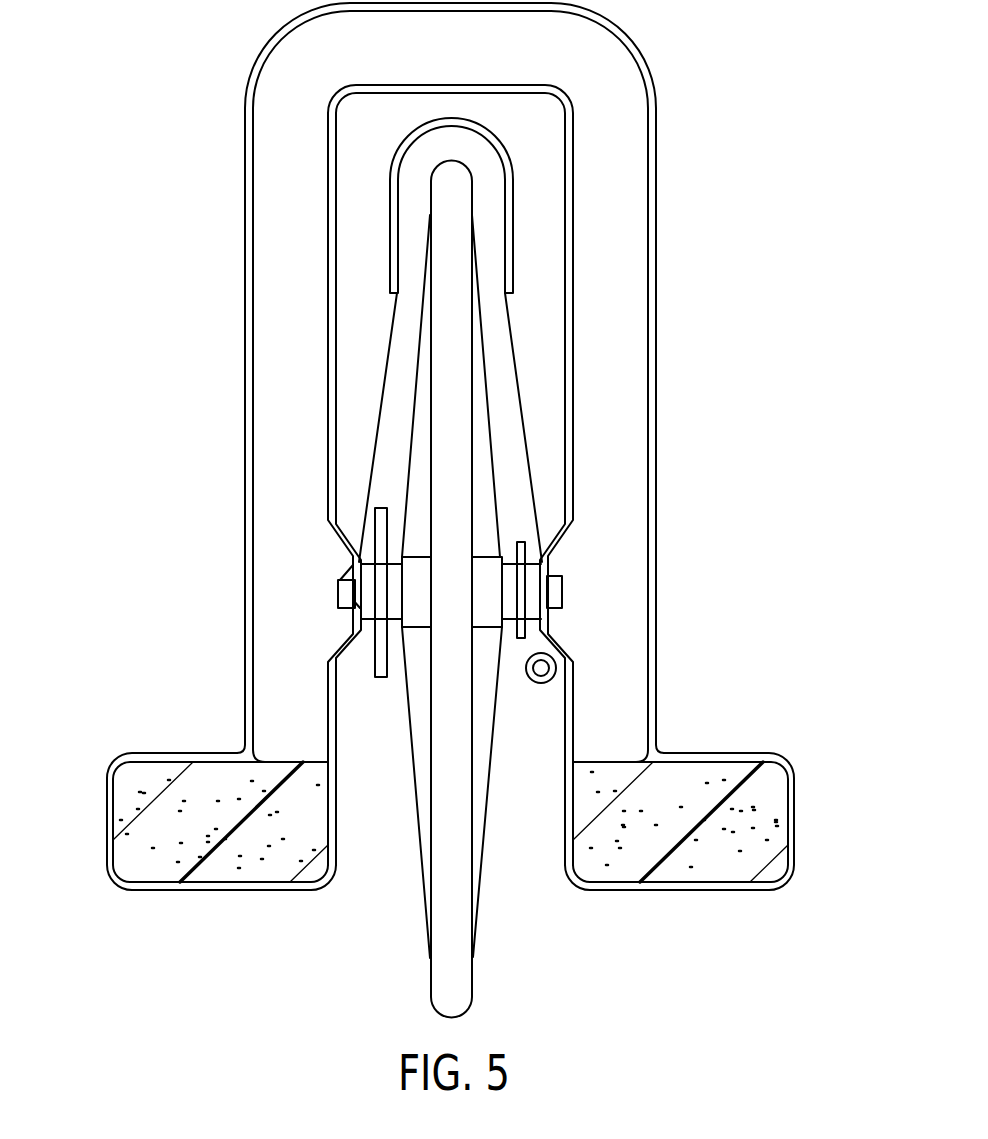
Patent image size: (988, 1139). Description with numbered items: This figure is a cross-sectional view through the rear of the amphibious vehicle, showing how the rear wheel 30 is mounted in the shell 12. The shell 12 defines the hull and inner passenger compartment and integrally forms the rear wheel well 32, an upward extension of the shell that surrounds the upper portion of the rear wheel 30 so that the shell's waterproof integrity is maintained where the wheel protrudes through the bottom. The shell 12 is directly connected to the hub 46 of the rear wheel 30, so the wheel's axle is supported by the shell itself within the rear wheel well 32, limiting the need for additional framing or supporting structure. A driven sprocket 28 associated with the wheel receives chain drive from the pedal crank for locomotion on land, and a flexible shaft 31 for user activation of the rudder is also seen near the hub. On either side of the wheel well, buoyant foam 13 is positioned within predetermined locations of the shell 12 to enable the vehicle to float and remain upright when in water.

The shell 12 is at (200, 745).
The buoyant foam 13 is at (125, 800).
The driven sprocket 28 is at (380, 677).
The rear wheel 30 is at (472, 998).
The flexible shaft 31 is at (560, 648).
The rear wheel well 32 is at (390, 180).
The hub 46 is at (488, 628).